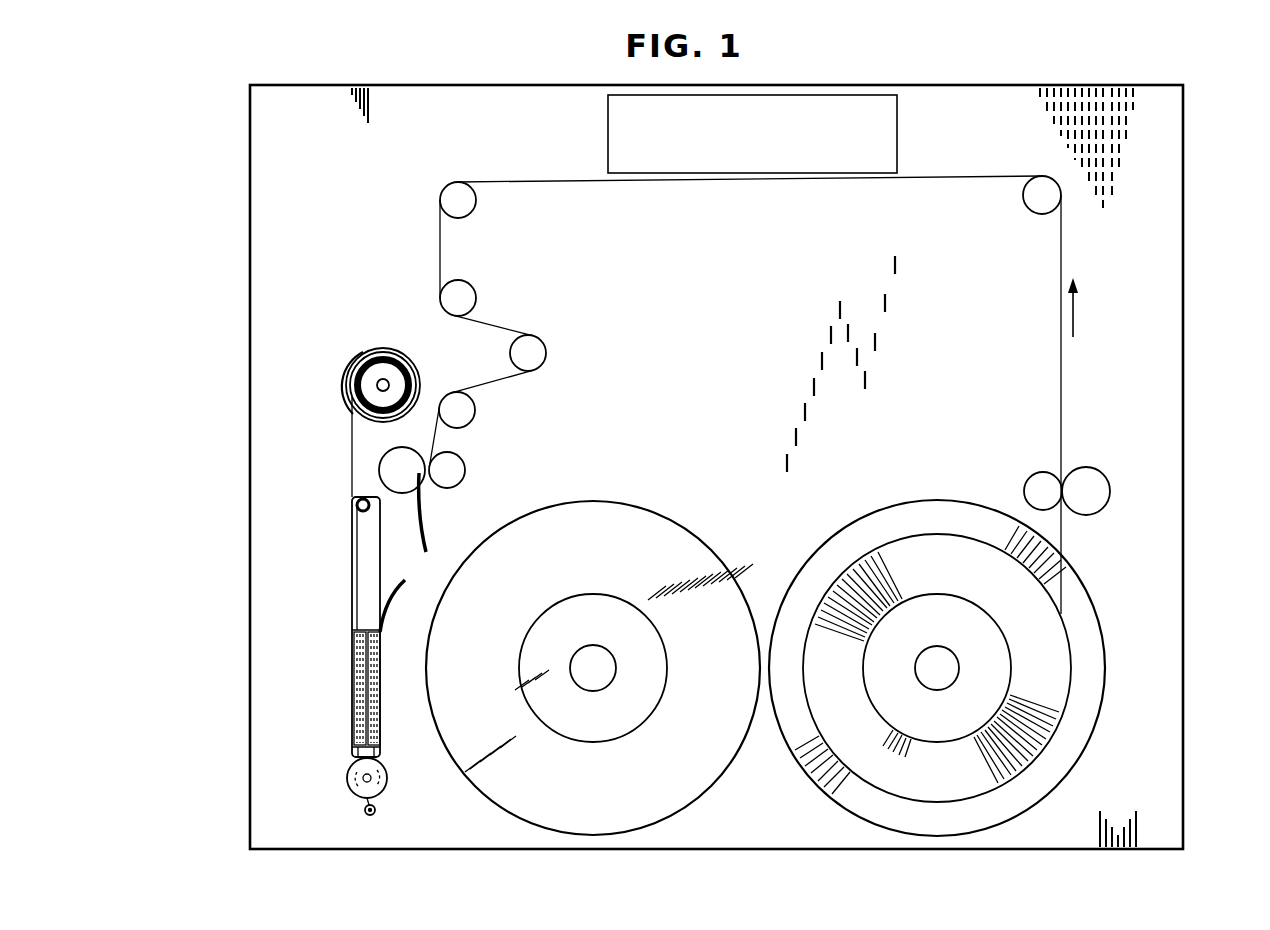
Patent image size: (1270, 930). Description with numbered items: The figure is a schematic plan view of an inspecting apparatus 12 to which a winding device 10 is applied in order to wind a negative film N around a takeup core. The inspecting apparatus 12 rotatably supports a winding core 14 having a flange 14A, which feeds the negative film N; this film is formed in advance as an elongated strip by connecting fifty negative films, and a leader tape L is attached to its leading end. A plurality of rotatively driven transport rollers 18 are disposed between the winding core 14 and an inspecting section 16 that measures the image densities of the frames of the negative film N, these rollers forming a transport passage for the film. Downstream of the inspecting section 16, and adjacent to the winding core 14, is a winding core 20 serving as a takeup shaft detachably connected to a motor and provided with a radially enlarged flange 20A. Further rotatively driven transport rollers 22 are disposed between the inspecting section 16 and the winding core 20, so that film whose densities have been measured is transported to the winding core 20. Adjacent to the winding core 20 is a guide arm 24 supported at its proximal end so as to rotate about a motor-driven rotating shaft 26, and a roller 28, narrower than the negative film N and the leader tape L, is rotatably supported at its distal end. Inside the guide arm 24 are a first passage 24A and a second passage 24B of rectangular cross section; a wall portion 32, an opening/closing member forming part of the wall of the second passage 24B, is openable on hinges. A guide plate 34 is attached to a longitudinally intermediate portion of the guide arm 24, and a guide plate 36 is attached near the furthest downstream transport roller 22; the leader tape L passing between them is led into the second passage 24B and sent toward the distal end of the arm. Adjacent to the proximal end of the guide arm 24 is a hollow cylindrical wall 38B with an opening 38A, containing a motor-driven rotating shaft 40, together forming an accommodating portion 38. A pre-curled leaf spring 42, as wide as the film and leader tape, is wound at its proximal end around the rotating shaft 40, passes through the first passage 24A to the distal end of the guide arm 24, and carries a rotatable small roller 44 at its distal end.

The winding device 10 is at (306, 368).
The inspecting apparatus 12 is at (1190, 233).
The winding core 14 is at (990, 660).
The flange 14A is at (1073, 575).
The negative film N is at (1025, 750).
The inspecting section 16 is at (897, 138).
The transport rollers 18 is at (1029, 210).
The winding core 20 is at (638, 717).
The flange 20A is at (700, 795).
The transport rollers 22 is at (470, 205).
The leader tape L is at (536, 178).
The guide arm 24 is at (349, 627).
The first passage 24A is at (354, 686).
The second passage 24B is at (368, 722).
The rotating shaft 26 is at (357, 506).
The roller 28 is at (347, 778).
The wall portion 32 is at (380, 680).
The guide plate 34 is at (397, 600).
The guide plate 36 is at (426, 522).
The accommodating portion 38 is at (381, 361).
The opening 38A is at (350, 392).
The hollow cylindrical wall 38B is at (365, 355).
The rotating shaft 40 is at (393, 375).
The leaf spring 42 is at (352, 456).
The small roller 44 is at (376, 810).